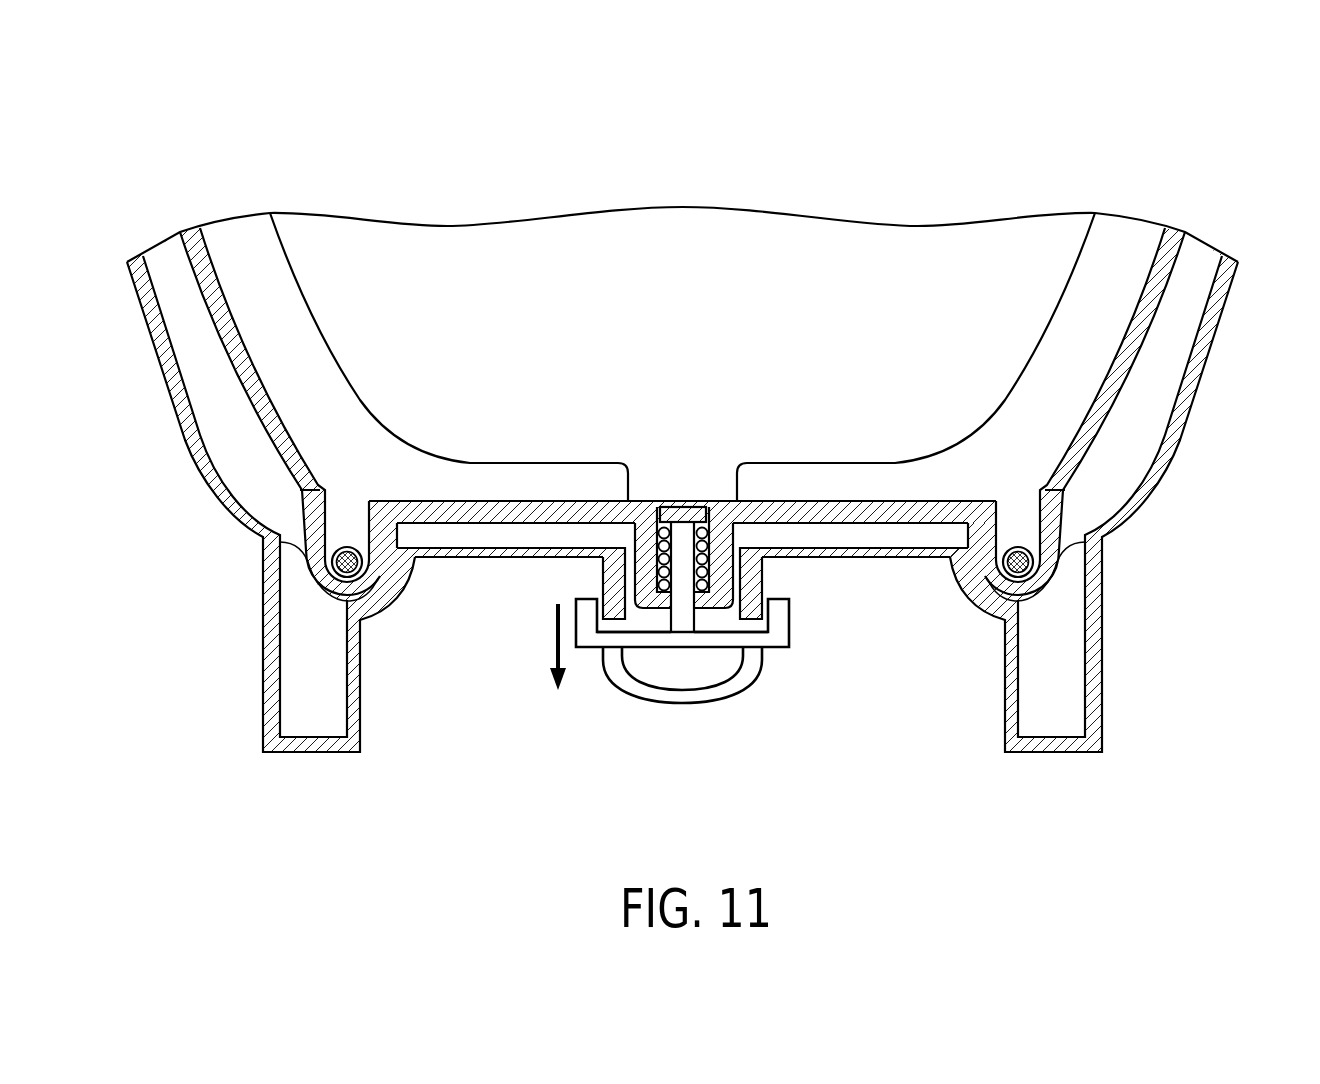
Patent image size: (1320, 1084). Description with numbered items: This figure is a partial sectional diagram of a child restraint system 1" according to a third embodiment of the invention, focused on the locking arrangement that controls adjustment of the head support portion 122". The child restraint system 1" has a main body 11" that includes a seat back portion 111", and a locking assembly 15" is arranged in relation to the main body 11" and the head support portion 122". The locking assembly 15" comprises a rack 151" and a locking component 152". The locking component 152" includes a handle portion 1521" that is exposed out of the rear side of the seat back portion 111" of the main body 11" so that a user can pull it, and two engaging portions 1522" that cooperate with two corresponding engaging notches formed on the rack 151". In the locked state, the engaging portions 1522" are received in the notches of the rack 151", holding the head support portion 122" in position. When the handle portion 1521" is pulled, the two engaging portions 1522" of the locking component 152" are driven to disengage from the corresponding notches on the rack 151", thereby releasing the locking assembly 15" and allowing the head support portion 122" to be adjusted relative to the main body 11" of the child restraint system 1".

The child restraint system 1 is at (1197, 142).
The main body 11 is at (185, 555).
The seat back portion 111 is at (493, 558).
The head support portion 122 is at (548, 501).
The locking assembly 15 is at (745, 661).
The rack 151 is at (763, 572).
The locking component 152 is at (717, 669).
The handle portion 1521 is at (704, 699).
The engaging portions 1522 is at (645, 622).